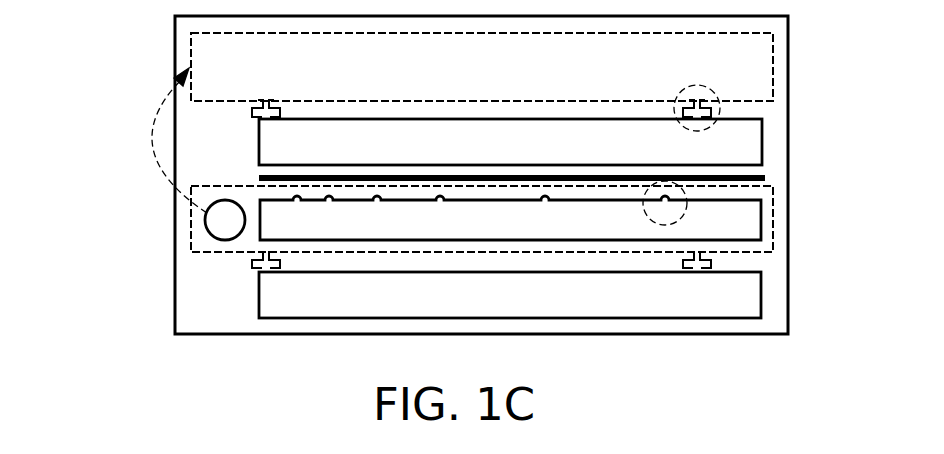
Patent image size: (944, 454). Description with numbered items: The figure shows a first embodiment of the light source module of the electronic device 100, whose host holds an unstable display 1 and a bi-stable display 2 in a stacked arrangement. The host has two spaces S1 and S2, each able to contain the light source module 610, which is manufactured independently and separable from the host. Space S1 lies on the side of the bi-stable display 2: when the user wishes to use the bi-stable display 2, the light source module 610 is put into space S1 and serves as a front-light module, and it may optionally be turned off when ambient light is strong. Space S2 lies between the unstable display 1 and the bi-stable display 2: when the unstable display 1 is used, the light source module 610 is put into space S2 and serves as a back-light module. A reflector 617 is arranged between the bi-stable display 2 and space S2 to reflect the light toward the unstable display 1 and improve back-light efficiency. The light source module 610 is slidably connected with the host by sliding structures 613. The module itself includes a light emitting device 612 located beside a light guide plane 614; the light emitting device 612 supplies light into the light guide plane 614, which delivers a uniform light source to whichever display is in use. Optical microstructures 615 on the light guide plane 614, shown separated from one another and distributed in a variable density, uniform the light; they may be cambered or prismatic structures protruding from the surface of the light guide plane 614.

The electronic device 100 is at (175, 47).
The space S1 is at (773, 69).
The space S2 is at (773, 223).
The bi-stable display 2 is at (762, 155).
The unstable display 1 is at (762, 307).
The reflector 617 is at (765, 177).
The sliding structures 613 is at (708, 86).
The light source module 610 is at (95, 247).
The light emitting device 612 is at (206, 222).
The light guide plane 614 is at (260, 237).
The optical microstructures 615 is at (673, 215).